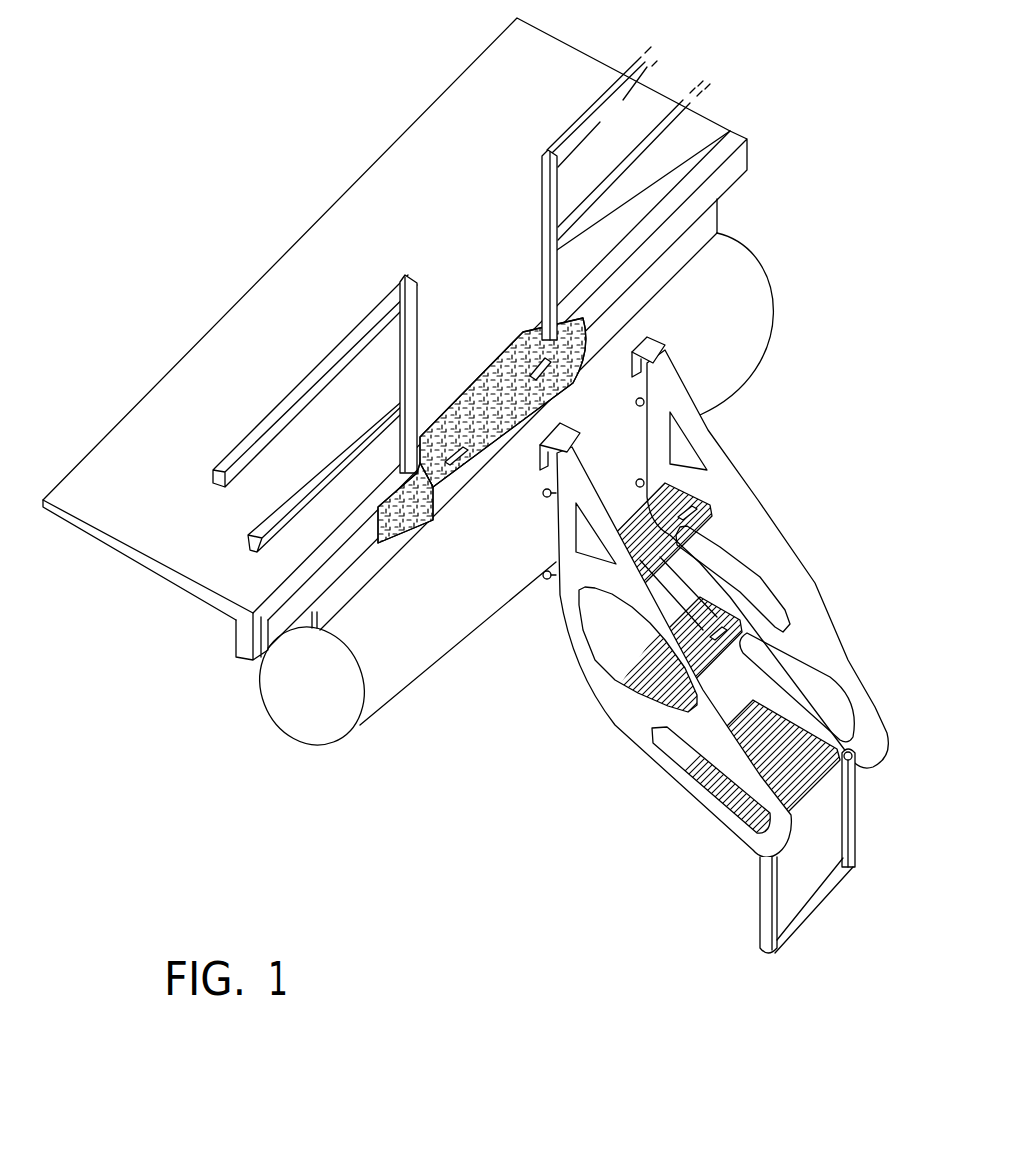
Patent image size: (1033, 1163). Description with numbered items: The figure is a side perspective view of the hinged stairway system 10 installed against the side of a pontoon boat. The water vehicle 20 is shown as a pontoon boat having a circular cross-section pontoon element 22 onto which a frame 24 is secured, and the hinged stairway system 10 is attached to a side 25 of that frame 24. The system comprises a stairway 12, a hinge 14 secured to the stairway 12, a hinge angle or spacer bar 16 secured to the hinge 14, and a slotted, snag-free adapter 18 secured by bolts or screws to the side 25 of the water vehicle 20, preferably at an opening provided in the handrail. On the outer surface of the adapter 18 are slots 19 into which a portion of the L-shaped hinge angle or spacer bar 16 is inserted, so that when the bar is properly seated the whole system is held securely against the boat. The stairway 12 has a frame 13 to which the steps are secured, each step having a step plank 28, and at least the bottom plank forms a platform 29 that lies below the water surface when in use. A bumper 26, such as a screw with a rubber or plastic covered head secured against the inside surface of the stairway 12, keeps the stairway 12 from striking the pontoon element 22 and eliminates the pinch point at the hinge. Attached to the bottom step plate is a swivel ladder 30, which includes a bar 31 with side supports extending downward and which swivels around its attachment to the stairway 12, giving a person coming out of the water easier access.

The hinged stairway system 10 is at (665, 671).
The stairway 12 is at (818, 583).
The frame 13 is at (607, 688).
The hinge 14 is at (668, 336).
The hinge angle or spacer bar 16 is at (578, 428).
The slotted, snag-free adapter 18 is at (517, 380).
The slots 19 is at (475, 447).
The water vehicle 20 is at (385, 395).
The pontoon element 22 is at (299, 690).
The frame 24 is at (140, 500).
The side 25 is at (253, 652).
The bumper 26 is at (547, 578).
The step plank 28 is at (723, 612).
The platform 29 is at (807, 735).
The swivel ladder 30 is at (757, 898).
The bar 31 is at (815, 898).